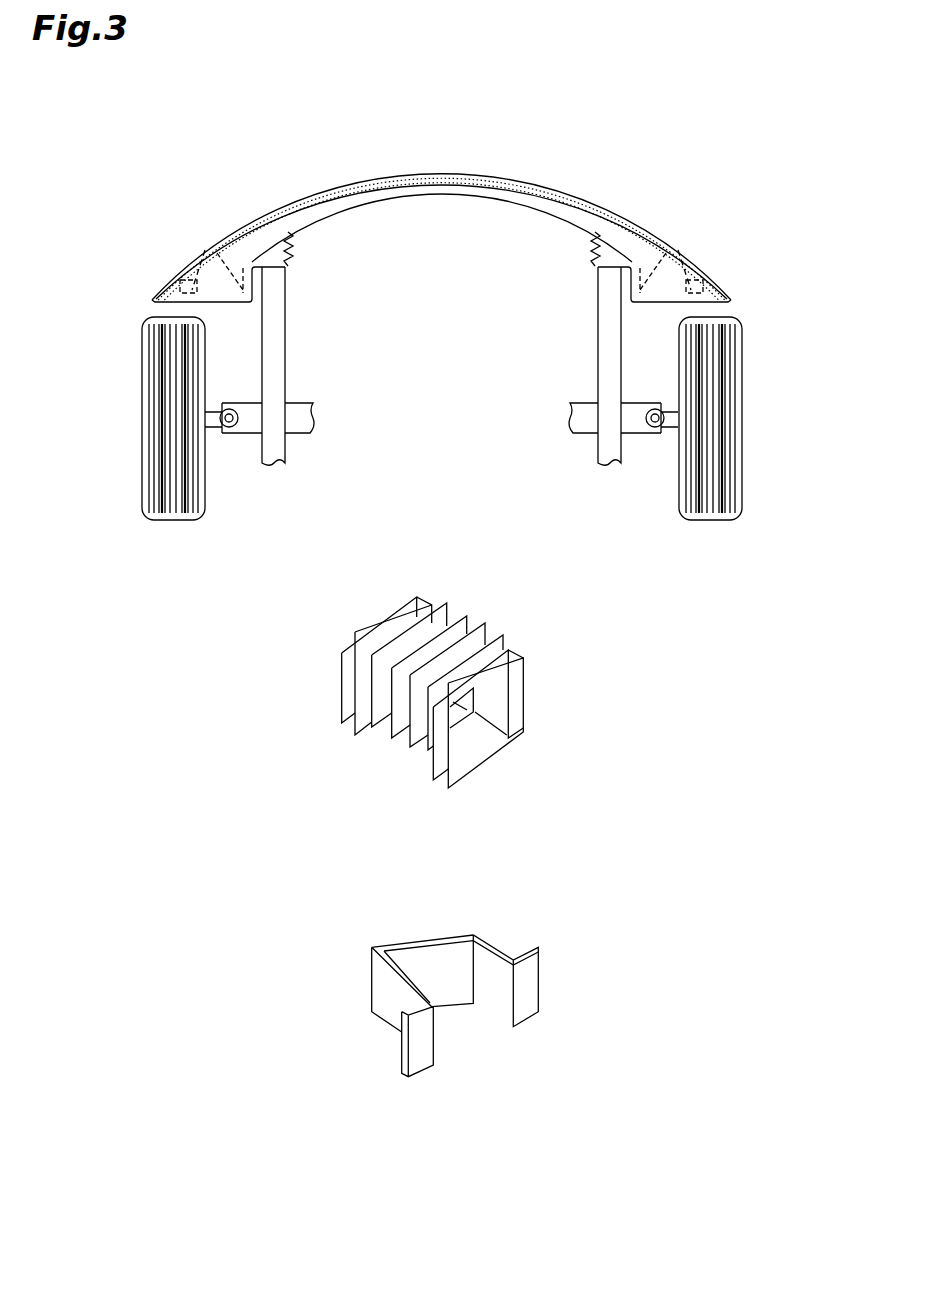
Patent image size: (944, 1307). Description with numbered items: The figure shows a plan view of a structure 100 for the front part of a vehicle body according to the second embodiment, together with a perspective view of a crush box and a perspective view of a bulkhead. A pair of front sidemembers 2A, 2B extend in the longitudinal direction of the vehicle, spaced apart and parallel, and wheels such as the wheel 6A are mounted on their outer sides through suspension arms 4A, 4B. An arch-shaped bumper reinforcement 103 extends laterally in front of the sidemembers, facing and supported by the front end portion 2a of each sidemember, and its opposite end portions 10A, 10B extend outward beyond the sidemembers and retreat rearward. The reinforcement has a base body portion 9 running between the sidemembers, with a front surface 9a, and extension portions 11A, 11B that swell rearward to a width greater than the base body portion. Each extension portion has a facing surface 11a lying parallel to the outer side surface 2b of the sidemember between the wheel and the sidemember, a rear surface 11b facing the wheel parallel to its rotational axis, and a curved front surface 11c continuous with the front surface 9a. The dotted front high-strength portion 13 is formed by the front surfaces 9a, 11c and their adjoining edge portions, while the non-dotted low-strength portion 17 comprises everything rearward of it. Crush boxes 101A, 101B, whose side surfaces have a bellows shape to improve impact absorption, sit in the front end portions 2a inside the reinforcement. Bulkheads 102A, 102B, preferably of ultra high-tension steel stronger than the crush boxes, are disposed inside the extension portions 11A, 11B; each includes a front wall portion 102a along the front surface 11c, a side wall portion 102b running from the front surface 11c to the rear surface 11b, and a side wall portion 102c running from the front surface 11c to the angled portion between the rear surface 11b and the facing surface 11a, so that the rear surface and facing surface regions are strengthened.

The structure for a front part of a vehicle body 100 is at (256, 147).
The base body portion 9 is at (438, 201).
The front surface of the base body portion 9a is at (535, 182).
The front high-strength portion 13 is at (421, 172).
The low-strength portion 17 is at (316, 216).
The bumper reinforcement 103 is at (718, 191).
The end portion of the bumper reinforcement 10A is at (139, 208).
The end portion of the bumper reinforcement 10B is at (742, 248).
The extension portion 11A is at (185, 241).
The extension portion 11B is at (718, 240).
The facing surface 11a is at (266, 286).
The rear surface 11b is at (227, 306).
The front surface of the extension portion 11c is at (203, 256).
The front sidemember 2A is at (276, 371).
The front sidemember 2B is at (607, 360).
The front end portion 2a is at (281, 292).
The outer side surface 2b is at (262, 383).
The suspension arm 4A is at (297, 438).
The suspension arm 4B is at (581, 428).
The wheel 6A is at (170, 425).
The crush box 101A is at (296, 260).
The crush box 101B is at (588, 254).
The bulkhead 102A is at (177, 289).
The bulkhead 102B is at (700, 296).
The front wall portion 102a is at (170, 301).
The side wall portion 102b is at (178, 282).
The side wall portion 102c is at (243, 285).